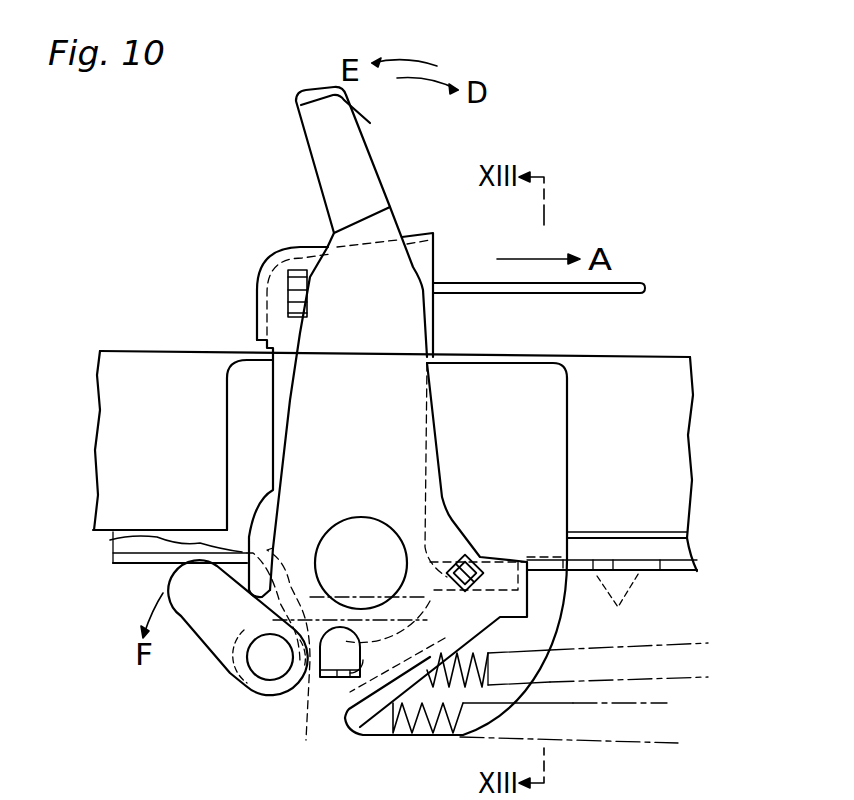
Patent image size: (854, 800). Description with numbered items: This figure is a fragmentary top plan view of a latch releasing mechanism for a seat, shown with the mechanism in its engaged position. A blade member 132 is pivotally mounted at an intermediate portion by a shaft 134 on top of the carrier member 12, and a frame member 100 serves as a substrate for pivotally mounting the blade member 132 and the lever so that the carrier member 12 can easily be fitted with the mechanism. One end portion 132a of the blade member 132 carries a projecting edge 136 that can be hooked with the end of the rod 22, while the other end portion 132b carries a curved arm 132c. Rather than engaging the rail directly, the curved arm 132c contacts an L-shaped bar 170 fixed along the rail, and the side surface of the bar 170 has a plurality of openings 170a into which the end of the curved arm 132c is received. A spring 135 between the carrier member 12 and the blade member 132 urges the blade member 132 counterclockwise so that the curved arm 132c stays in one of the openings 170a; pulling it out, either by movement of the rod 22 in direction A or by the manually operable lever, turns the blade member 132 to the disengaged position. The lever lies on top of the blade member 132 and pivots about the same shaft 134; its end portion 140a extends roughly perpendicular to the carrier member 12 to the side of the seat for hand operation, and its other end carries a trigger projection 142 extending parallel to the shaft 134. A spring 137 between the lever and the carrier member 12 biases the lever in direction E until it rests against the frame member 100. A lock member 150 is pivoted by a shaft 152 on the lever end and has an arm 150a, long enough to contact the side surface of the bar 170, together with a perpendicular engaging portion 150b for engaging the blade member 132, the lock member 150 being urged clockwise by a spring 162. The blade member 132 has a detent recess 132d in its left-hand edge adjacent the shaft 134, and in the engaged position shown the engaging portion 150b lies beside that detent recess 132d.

The carrier member 12 is at (167, 367).
The rod 22 is at (617, 289).
The frame member 100 is at (237, 428).
The blade member 132 is at (267, 264).
The one end portion 132a is at (277, 303).
The other end portion 132b is at (490, 692).
The curved arm 132c is at (553, 590).
The detent recess 132d is at (110, 541).
The shaft 134 is at (377, 531).
The spring 135 is at (413, 733).
The projecting edge 136 is at (300, 283).
The spring 137 is at (687, 655).
The one end portion of the lever 140a is at (400, 220).
The trigger projection 142 is at (480, 558).
The lock member 150 is at (253, 687).
The arm 150a is at (177, 583).
The engaging portion 150b is at (200, 621).
The shaft 152 is at (263, 678).
The spring 162 is at (303, 690).
The bar 170 is at (683, 571).
The openings 170a is at (624, 606).